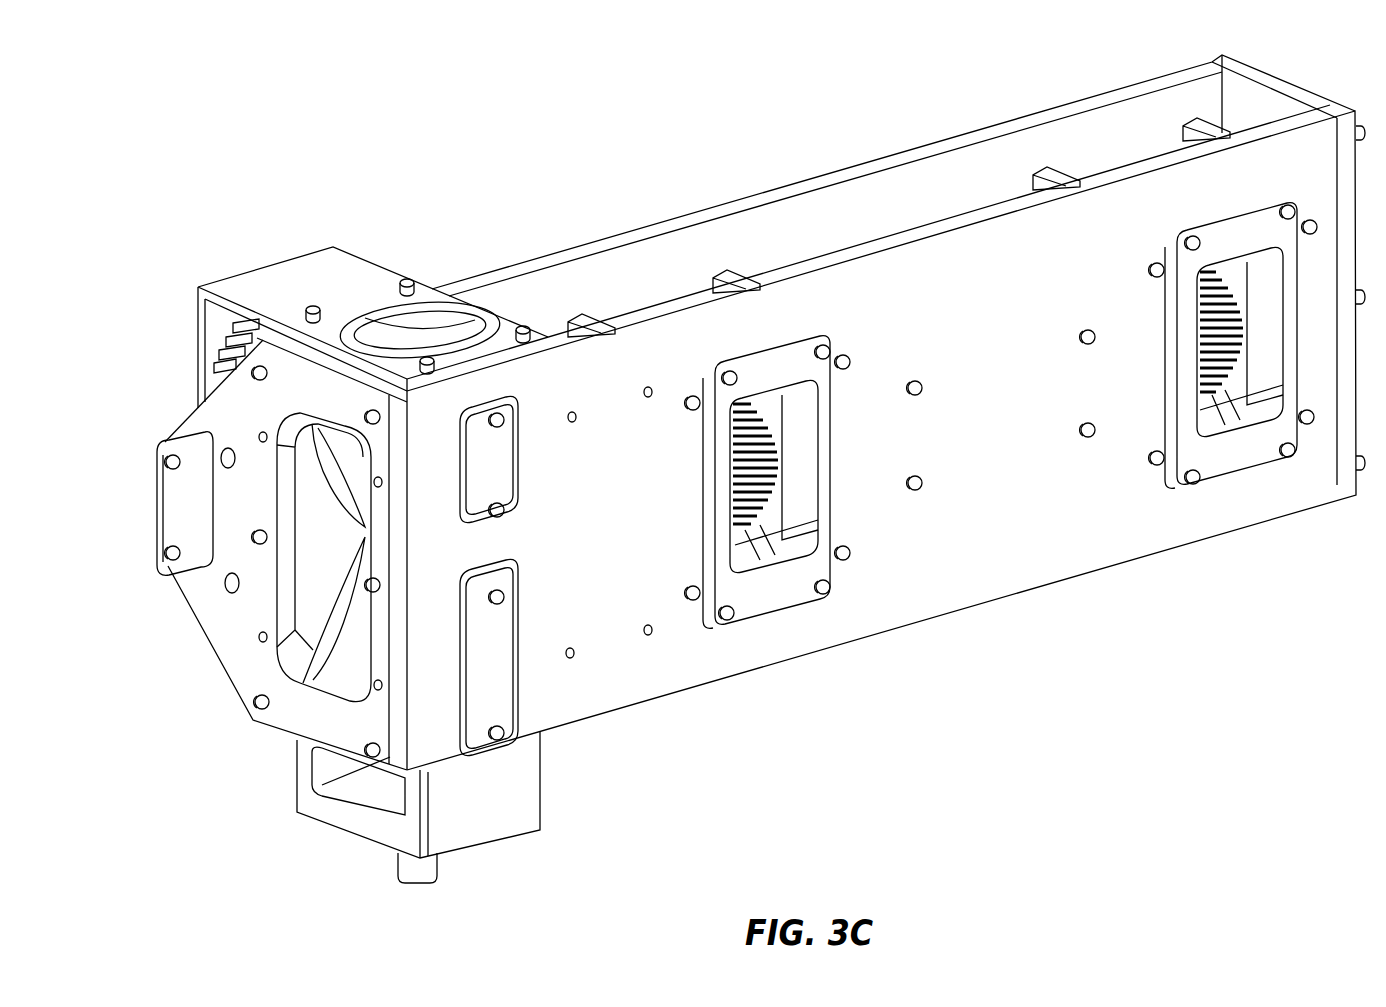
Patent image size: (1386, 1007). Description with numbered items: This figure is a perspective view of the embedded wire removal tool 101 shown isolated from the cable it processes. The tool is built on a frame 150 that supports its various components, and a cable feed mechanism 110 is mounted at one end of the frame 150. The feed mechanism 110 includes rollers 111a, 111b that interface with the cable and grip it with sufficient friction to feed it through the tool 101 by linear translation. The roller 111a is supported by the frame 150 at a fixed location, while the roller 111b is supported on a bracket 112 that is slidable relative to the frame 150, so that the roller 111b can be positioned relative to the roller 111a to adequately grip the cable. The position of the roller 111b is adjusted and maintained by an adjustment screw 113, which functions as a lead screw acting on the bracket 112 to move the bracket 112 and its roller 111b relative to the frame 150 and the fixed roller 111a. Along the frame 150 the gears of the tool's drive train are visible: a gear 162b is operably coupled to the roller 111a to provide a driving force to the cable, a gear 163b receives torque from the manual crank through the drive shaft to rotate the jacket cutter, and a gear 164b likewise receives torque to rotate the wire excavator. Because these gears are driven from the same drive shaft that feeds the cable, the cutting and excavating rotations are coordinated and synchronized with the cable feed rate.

The embedded wire removal tool 101 is at (449, 70).
The cable feed mechanism 110 is at (236, 242).
The roller 111a is at (388, 340).
The roller 111b is at (333, 653).
The bracket 112 is at (377, 778).
The adjustment screw 113 is at (417, 870).
The frame 150 is at (968, 128).
The gear 162b is at (235, 347).
The gear 163b is at (752, 527).
The gear 164b is at (1203, 393).